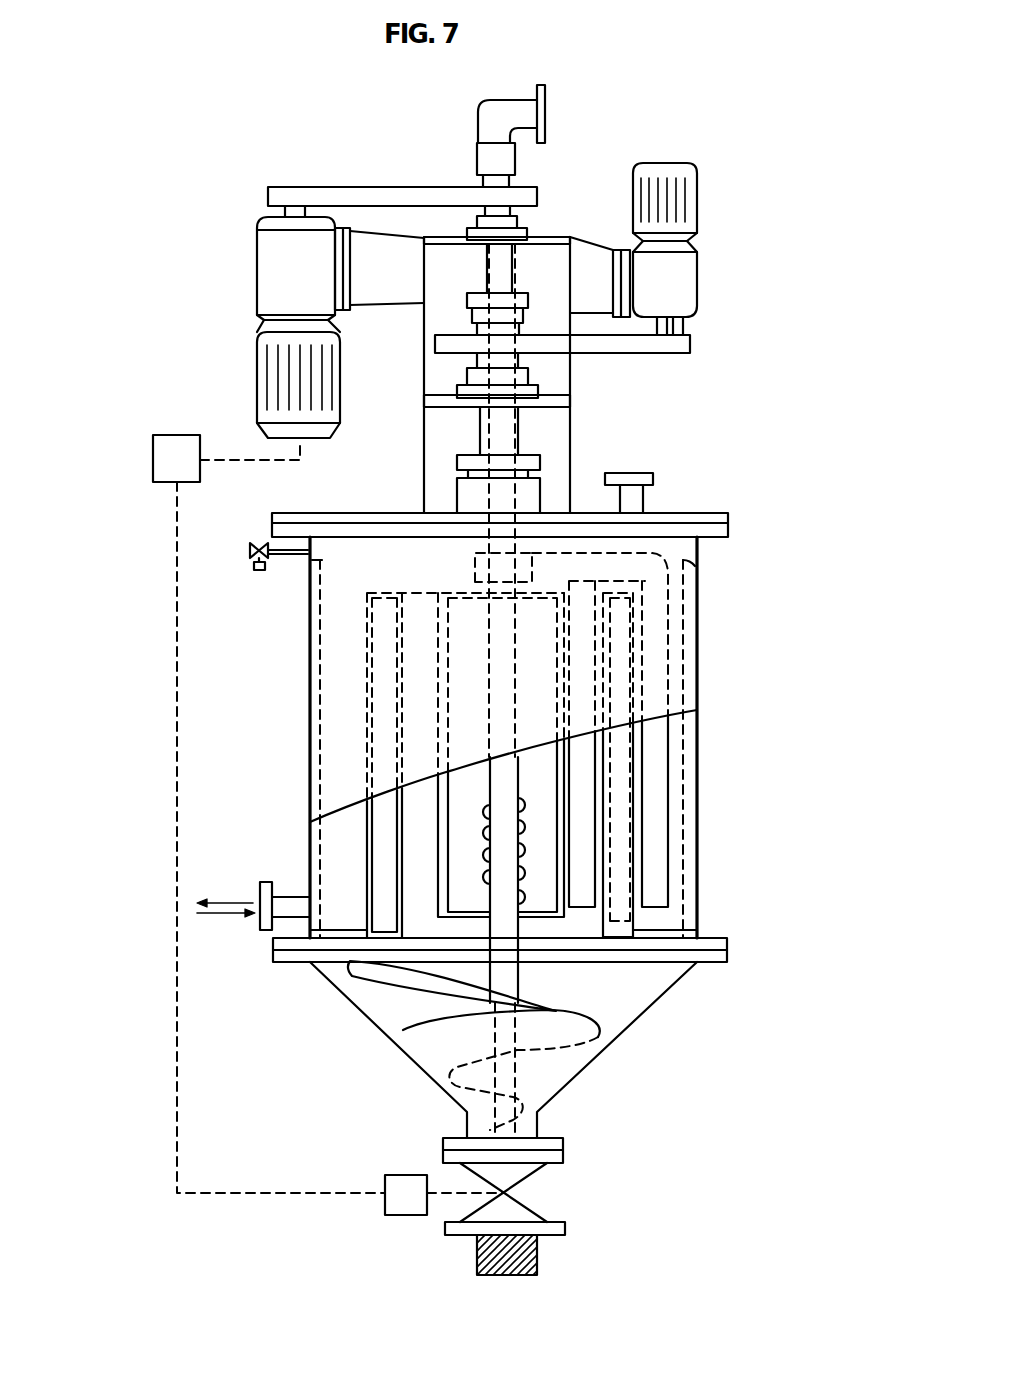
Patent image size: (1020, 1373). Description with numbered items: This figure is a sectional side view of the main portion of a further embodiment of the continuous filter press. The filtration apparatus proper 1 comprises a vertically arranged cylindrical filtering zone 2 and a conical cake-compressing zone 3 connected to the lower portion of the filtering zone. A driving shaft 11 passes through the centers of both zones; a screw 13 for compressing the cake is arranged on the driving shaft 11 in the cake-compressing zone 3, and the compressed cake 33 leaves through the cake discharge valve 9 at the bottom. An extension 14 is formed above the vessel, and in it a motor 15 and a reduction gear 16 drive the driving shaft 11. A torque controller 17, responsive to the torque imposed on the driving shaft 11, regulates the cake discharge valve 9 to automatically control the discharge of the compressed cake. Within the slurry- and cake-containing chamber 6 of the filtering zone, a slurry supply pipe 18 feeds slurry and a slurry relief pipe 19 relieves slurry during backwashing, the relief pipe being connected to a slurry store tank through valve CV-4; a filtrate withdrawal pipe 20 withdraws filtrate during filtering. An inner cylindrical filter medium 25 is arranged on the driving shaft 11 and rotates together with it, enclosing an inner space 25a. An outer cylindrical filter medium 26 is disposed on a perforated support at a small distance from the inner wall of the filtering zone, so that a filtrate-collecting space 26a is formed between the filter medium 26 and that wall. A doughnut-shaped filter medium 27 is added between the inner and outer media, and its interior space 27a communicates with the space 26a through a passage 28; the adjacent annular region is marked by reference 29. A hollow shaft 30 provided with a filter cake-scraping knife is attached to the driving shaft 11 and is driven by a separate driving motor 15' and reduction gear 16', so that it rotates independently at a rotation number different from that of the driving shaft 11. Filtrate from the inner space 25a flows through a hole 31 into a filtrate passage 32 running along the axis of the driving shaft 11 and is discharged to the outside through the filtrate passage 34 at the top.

The filtration apparatus proper 1 is at (730, 594).
The filtering zone 2 is at (703, 551).
The cake-compressing zone 3 is at (662, 990).
The slurry- and cake-containing chamber 6 is at (355, 570).
The cake discharge valve 9 is at (537, 1170).
The driving shaft 11 is at (485, 277).
The screw 13 is at (405, 978).
The extension 14 is at (572, 420).
The motor 15 is at (267, 379).
The driving motor 15' is at (704, 202).
The reduction gear 16 is at (309, 268).
The reduction gear 16' is at (672, 286).
The torque controller 17 is at (153, 458).
The slurry supply pipe 18 is at (630, 413).
The slurry relief pipe 19 is at (290, 554).
The filtrate withdrawal pipe 20 is at (262, 885).
The inner cylindrical filter medium 25 is at (438, 727).
The inner space 25a is at (460, 623).
The outer cylindrical filter medium 26 is at (318, 617).
The filtrate-collecting space 26a is at (690, 668).
The doughnut-shaped filter medium 27 is at (397, 710).
The interior space 27a is at (380, 655).
The passage 28 is at (660, 922).
The annular passage 29 is at (588, 838).
The hollow shaft 30 is at (480, 432).
The hole 31 is at (490, 838).
The filtrate passage 32 is at (503, 623).
The cake 33 is at (537, 1255).
The filtrate passage 34 is at (572, 103).
The valve CV-4 is at (258, 543).